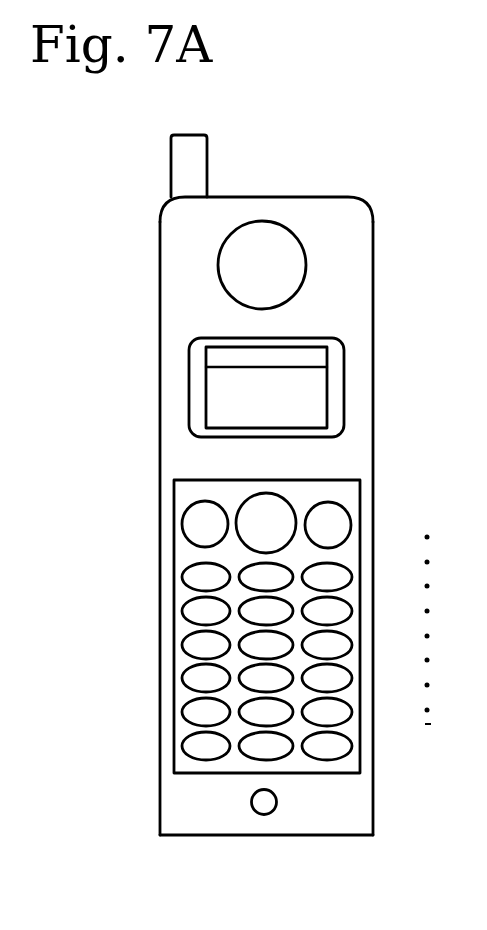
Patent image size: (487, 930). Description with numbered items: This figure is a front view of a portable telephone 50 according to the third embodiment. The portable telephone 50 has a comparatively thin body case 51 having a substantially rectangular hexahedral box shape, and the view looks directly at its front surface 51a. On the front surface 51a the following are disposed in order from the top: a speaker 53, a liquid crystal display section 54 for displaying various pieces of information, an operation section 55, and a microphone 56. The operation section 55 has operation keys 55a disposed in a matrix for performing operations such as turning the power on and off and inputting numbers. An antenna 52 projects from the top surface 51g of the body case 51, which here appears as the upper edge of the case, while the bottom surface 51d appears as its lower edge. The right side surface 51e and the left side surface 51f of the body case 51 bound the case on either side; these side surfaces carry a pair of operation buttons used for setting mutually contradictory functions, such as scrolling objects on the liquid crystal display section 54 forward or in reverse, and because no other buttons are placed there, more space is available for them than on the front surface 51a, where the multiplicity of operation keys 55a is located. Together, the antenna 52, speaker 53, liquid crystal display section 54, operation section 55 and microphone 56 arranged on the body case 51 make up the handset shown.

The portable telephone 50 is at (305, 180).
The body case 51 is at (373, 300).
The front surface 51a is at (352, 454).
The bottom surface 51d is at (318, 837).
The right side surface 51e is at (373, 398).
The left side surface 51f is at (160, 607).
The top surface 51g is at (315, 197).
The antenna 52 is at (171, 164).
The speaker 53 is at (308, 260).
The liquid crystal display section 54 is at (346, 362).
The operation section 55 is at (193, 552).
The operation keys 55a is at (340, 522).
The microphone 56 is at (277, 798).